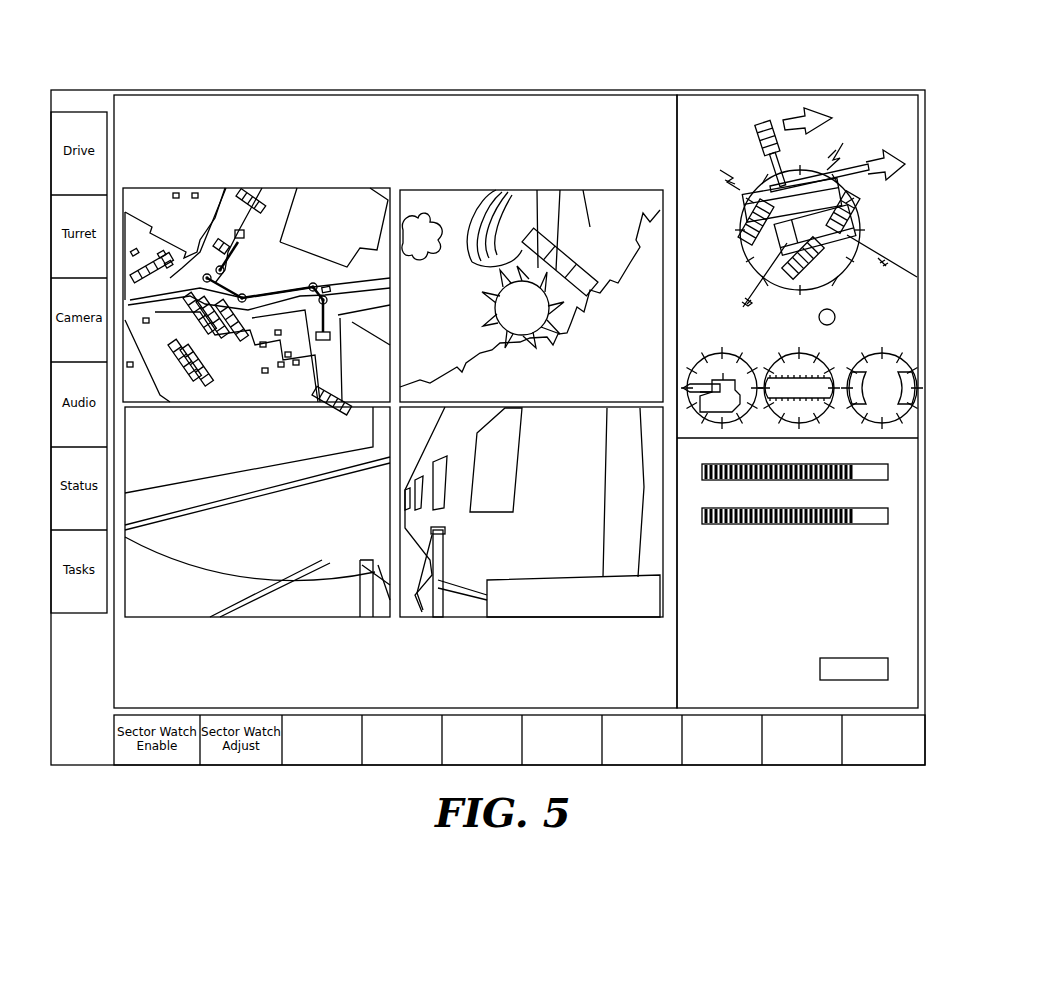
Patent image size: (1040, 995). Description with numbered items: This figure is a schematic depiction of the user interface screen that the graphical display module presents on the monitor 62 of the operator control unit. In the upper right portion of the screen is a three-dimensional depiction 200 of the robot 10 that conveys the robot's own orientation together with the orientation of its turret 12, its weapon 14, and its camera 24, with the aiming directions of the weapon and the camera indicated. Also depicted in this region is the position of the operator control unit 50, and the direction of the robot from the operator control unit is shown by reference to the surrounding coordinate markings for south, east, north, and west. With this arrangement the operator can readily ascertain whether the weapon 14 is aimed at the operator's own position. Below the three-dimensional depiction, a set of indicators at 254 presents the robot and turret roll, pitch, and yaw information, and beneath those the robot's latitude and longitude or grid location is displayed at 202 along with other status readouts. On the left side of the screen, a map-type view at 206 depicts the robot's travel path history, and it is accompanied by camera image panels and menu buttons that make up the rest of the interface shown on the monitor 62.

The robot 10 is at (825, 175).
The turret 12 is at (755, 192).
The weapon 14 is at (853, 172).
The camera 24 is at (765, 186).
The operator control unit 50 is at (836, 317).
The monitor 62 is at (396, 137).
The three-dimensional depiction 200 is at (804, 152).
The latitude and longitude display 202 is at (893, 588).
The travel path history depiction 206 is at (273, 300).
The roll, pitch, and yaw information display 254 is at (892, 378).